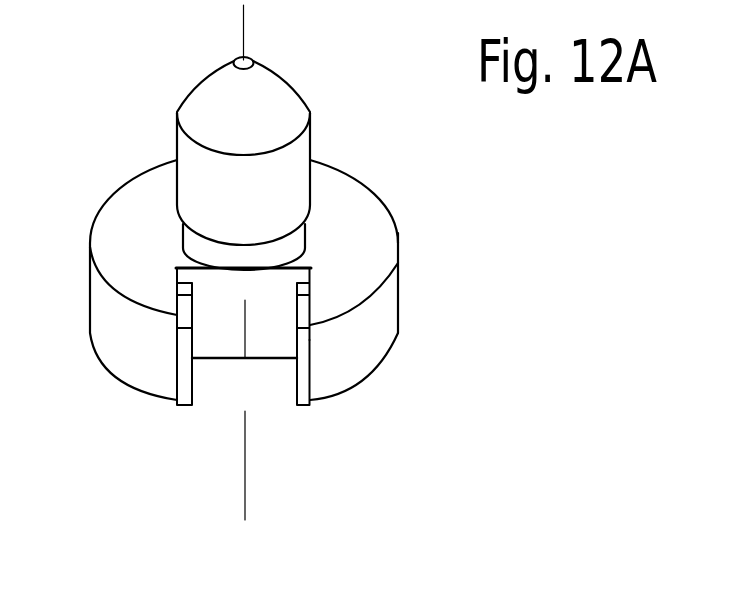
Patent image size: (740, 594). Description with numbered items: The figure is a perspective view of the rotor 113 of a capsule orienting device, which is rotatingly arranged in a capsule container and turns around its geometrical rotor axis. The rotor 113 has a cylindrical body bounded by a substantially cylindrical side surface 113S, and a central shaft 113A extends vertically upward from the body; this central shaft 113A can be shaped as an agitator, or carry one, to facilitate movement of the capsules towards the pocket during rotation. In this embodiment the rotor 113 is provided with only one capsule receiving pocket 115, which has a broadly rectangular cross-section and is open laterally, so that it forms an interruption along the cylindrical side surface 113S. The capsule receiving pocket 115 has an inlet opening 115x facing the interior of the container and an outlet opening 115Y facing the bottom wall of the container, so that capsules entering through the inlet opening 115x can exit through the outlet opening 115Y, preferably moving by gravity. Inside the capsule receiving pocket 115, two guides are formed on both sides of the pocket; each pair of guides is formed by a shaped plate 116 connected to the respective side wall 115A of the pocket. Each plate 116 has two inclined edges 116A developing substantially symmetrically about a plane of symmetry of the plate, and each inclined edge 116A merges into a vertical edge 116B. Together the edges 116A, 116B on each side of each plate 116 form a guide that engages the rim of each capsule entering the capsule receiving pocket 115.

The rotor 113 is at (274, 284).
The central shaft 113A is at (307, 150).
The cylindrical side surface 113S is at (400, 285).
The capsule receiving pocket 115 is at (256, 351).
The side wall 115A is at (184, 274).
The inlet opening 115x is at (233, 267).
The outlet opening 115Y is at (232, 358).
The shaped plate 116 is at (256, 384).
The inclined edge 116A is at (183, 318).
The vertical edge 116B is at (185, 372).